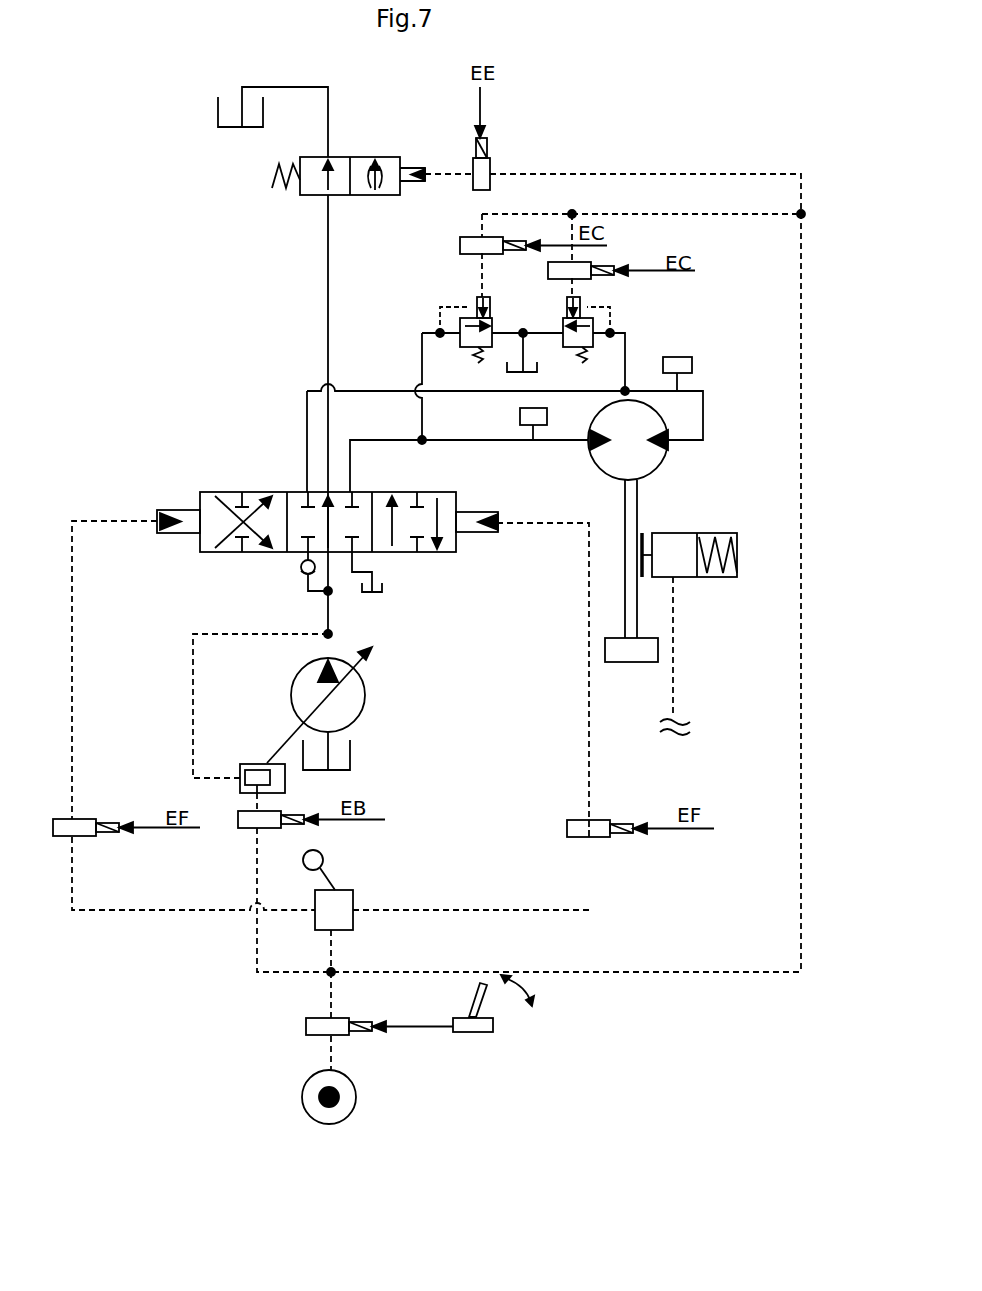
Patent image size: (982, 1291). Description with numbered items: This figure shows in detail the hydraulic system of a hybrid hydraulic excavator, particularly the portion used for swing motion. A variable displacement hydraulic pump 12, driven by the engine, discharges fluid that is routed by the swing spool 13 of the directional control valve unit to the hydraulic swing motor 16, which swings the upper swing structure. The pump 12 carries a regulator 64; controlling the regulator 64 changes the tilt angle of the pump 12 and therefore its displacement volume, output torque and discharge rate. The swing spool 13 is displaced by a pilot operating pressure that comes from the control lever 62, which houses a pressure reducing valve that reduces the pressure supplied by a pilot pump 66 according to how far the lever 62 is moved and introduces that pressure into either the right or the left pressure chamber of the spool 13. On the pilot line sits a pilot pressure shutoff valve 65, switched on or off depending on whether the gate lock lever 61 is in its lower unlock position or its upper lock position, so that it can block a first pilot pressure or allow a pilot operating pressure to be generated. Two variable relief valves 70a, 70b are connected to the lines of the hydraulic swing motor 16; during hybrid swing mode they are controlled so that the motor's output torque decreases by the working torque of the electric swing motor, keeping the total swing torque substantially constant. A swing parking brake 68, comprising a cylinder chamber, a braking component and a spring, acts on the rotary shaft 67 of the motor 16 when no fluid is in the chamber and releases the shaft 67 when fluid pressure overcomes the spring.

The hydraulic pump 12 is at (365, 686).
The swing spool 13 is at (232, 490).
The hydraulic swing motor 16 is at (668, 458).
The gate lock lever 61 is at (474, 1033).
The control lever 62 is at (354, 898).
The regulator 64 is at (250, 763).
The pilot pressure shutoff valve 65 is at (316, 1037).
The pilot pump 66 is at (353, 1108).
The rotary shaft 67 is at (624, 500).
The swing parking brake 68 is at (704, 578).
The variable relief valve 70a is at (470, 352).
The variable relief valve 70b is at (586, 352).